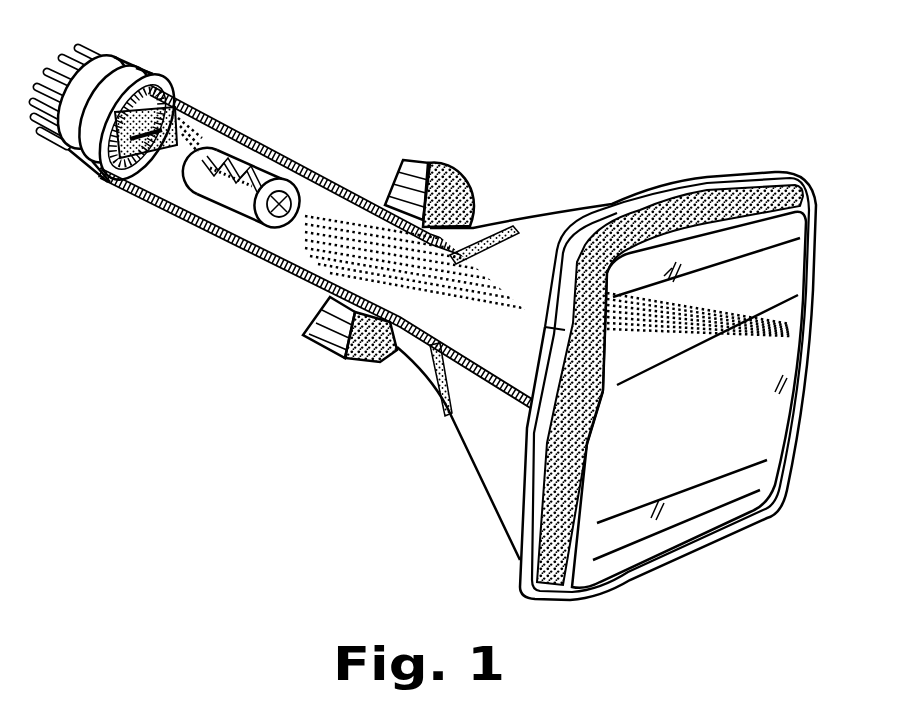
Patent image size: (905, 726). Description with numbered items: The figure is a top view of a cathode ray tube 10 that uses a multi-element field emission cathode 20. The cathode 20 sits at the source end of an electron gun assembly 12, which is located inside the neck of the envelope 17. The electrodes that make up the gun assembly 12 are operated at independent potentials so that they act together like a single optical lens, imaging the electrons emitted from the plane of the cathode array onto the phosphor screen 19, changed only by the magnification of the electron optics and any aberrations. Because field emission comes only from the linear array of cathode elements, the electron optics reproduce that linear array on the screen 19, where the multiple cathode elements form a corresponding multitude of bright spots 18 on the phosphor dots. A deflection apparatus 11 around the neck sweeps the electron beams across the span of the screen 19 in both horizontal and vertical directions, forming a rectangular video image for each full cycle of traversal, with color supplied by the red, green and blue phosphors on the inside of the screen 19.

The cathode ray tube 10 is at (508, 82).
The deflection apparatus 11 is at (457, 187).
The electron gun assembly 12 is at (220, 203).
The envelope 17 is at (483, 450).
The bright spots 18 is at (790, 330).
The phosphor screen 19 is at (730, 433).
The multi-element field emission cathode 20 is at (121, 163).